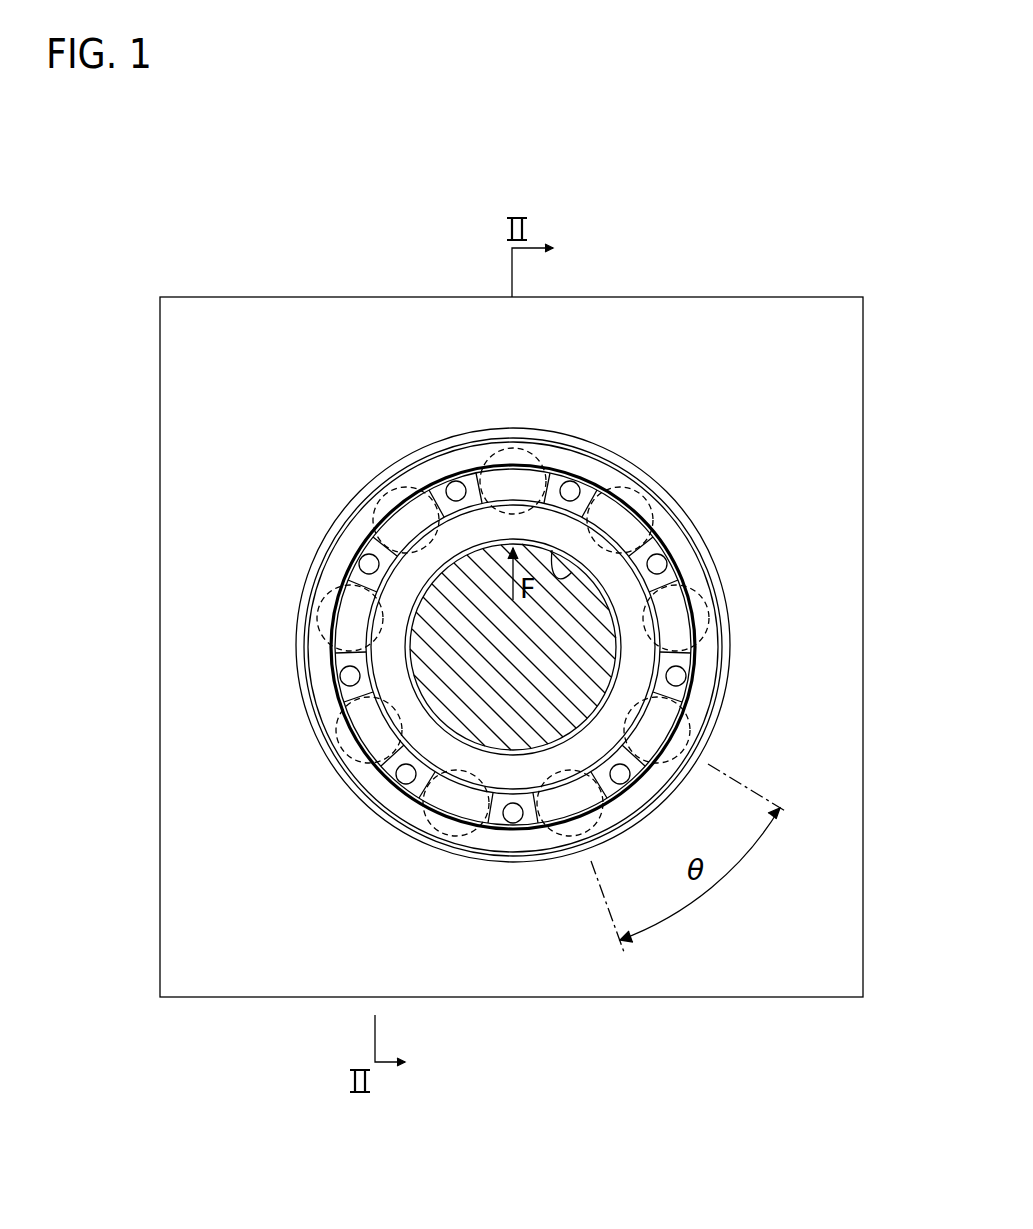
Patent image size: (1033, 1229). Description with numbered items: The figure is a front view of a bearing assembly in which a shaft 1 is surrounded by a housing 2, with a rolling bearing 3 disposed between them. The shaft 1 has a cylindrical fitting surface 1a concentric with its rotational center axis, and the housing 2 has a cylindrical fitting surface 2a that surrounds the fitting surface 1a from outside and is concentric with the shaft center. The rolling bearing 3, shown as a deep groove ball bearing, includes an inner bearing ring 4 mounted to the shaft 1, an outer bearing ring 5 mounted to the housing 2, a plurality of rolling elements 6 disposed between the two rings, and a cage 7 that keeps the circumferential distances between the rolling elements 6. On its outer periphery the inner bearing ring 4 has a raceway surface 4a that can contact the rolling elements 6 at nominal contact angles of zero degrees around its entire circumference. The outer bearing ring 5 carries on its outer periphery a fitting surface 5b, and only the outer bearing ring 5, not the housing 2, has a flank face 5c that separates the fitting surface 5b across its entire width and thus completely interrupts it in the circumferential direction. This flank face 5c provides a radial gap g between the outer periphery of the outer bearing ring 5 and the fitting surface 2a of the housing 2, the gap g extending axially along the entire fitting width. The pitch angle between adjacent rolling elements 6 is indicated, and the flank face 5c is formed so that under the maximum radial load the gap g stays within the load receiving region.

The shaft 1 is at (450, 637).
The fitting surface 1a is at (455, 552).
The housing 2 is at (185, 383).
The fitting surface 2a is at (373, 473).
The rolling bearing 3 is at (508, 656).
The inner bearing ring 4 is at (427, 742).
The raceway surface 4a is at (553, 557).
The outer bearing ring 5 is at (707, 677).
The fitting surface 5b is at (698, 533).
The flank face 5c is at (542, 440).
The rolling elements 6 is at (453, 836).
The cage 7 is at (373, 695).
The radial gap g is at (472, 433).